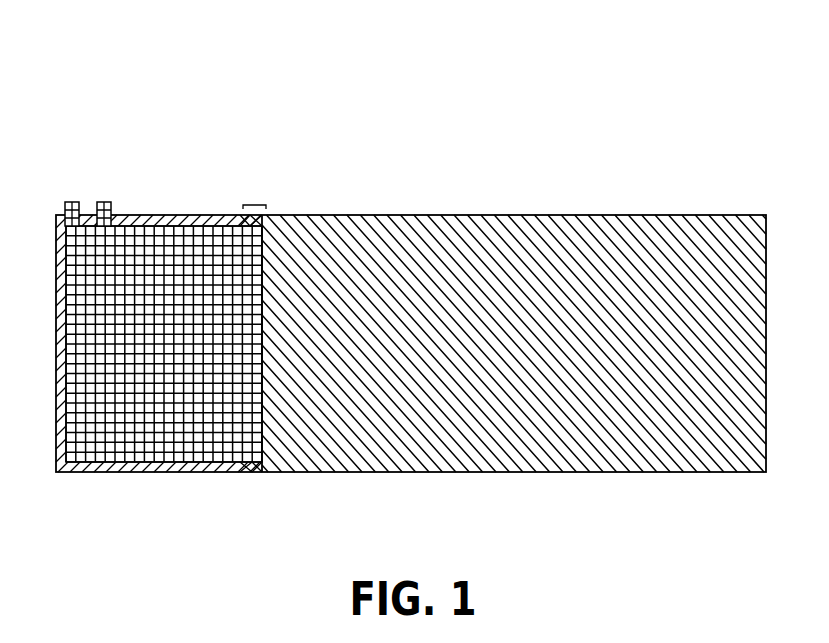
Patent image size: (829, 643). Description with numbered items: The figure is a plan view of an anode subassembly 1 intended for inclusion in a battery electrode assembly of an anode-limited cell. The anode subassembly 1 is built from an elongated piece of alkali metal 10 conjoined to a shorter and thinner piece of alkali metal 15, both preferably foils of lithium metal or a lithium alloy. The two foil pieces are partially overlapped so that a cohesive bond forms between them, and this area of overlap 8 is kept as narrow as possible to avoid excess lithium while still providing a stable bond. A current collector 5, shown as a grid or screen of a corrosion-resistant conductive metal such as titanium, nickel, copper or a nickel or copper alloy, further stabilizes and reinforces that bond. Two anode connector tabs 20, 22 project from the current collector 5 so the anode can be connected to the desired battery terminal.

The anode subassembly 1 is at (372, 101).
The current collector 5 is at (133, 222).
The area of overlap 8 is at (255, 203).
The elongated piece of alkali metal 10 is at (517, 247).
The shorter and thinner piece of alkali metal 15 is at (218, 217).
The anode connector tab 20 is at (67, 202).
The anode connector tab 22 is at (105, 202).